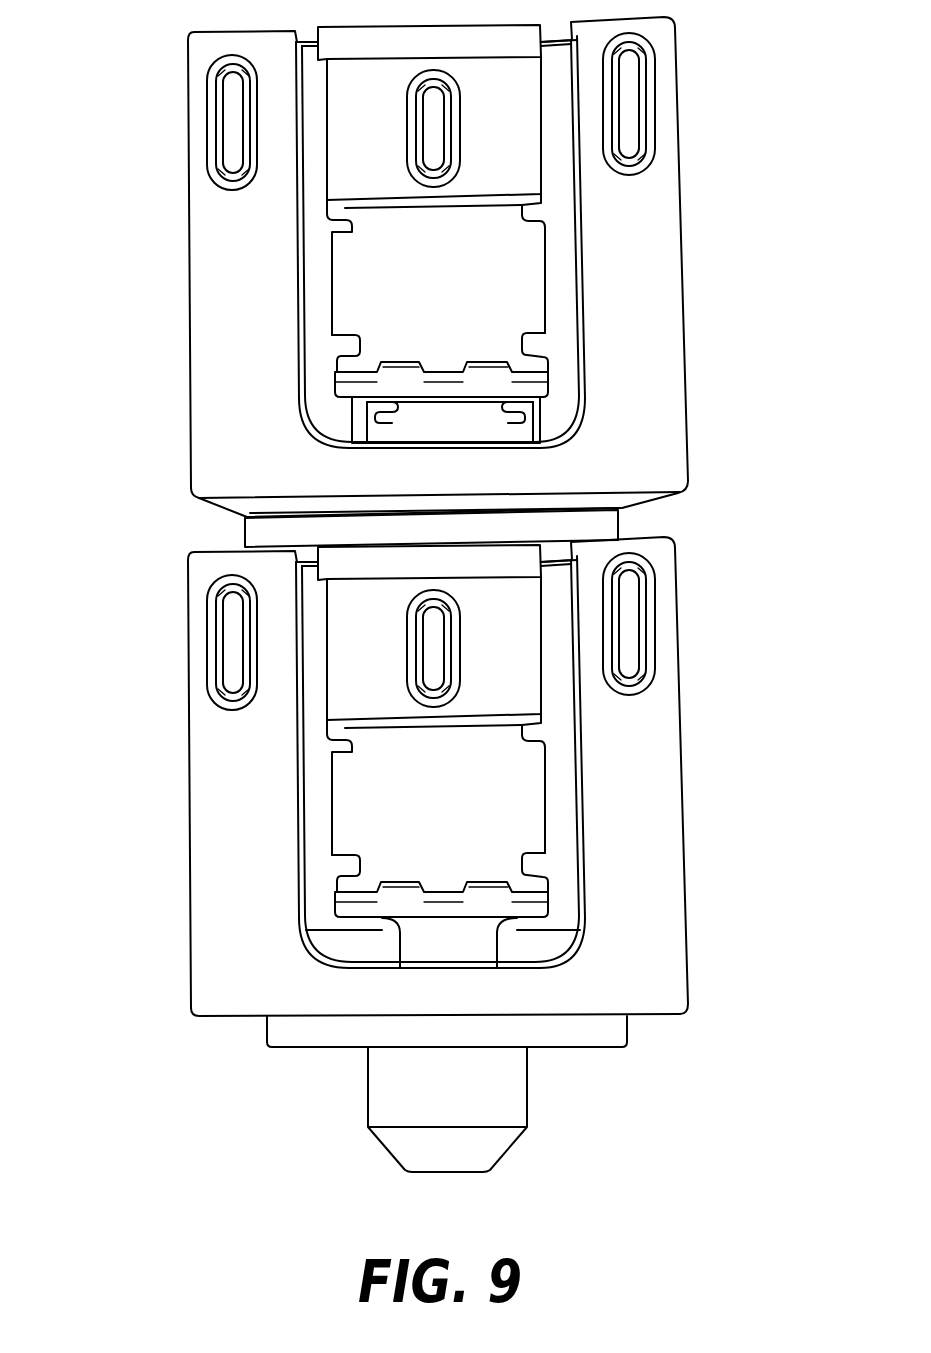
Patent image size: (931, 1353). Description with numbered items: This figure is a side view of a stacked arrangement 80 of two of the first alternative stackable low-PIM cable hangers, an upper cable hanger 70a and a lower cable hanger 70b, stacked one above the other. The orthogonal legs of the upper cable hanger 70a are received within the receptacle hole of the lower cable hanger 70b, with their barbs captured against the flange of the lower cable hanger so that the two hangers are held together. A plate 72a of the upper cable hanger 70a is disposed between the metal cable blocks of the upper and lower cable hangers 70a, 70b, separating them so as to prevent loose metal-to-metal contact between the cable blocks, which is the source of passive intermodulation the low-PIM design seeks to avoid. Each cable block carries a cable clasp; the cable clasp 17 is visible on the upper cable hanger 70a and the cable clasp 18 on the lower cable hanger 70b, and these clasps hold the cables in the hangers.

The connector assembly 80 is at (797, 111).
The upper cable hanger 70a is at (119, 167).
The lower cable hanger 70b is at (94, 659).
The plate 72a is at (267, 532).
The cable clasp 17 is at (497, 303).
The cable clasp 18 is at (495, 808).